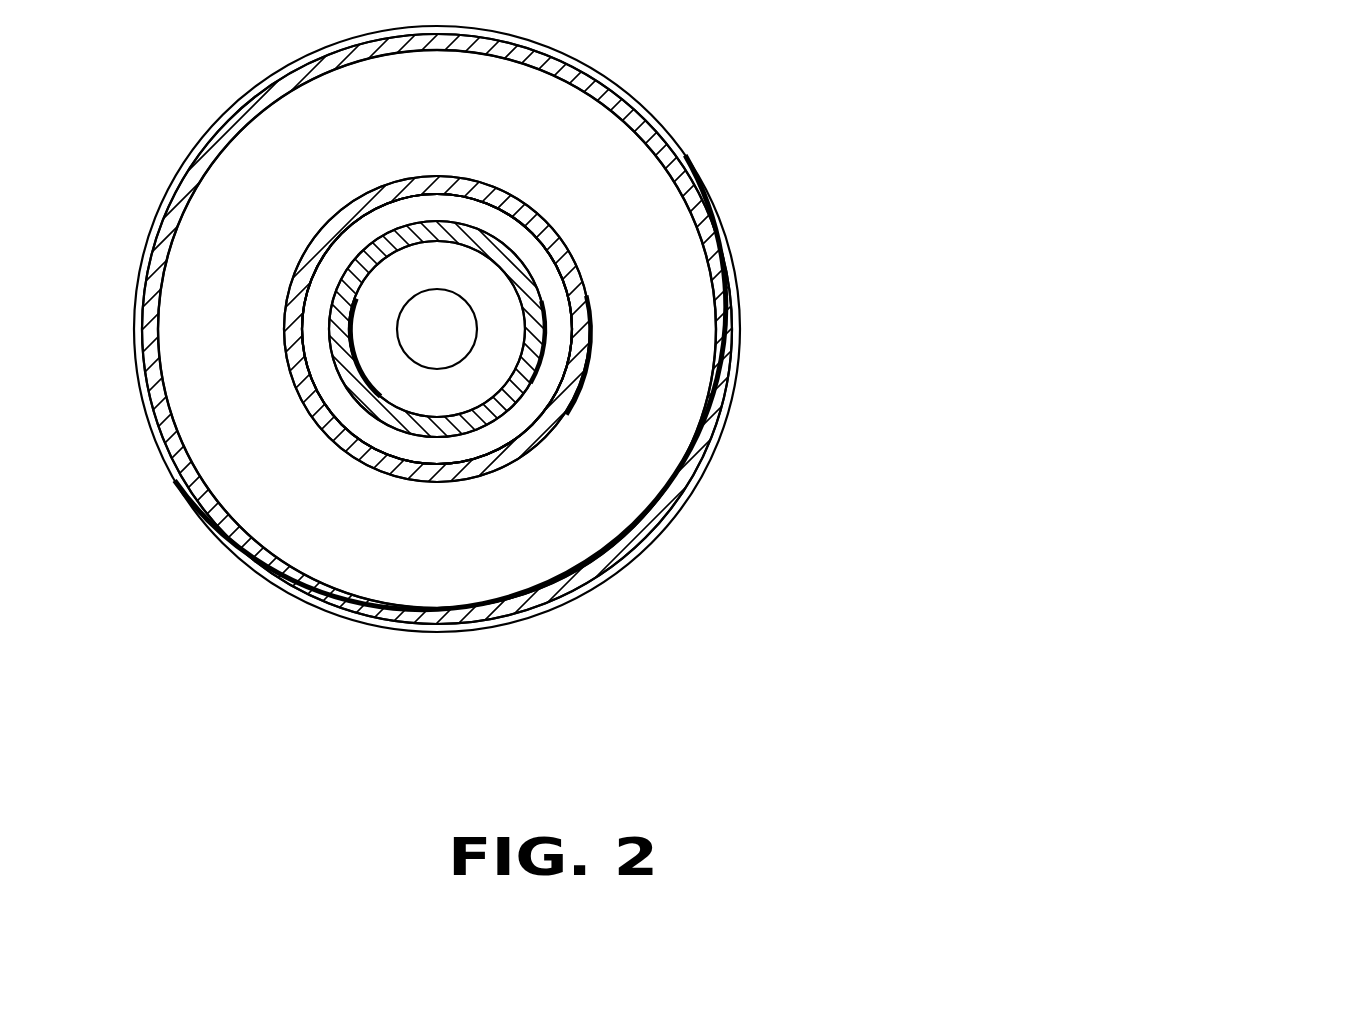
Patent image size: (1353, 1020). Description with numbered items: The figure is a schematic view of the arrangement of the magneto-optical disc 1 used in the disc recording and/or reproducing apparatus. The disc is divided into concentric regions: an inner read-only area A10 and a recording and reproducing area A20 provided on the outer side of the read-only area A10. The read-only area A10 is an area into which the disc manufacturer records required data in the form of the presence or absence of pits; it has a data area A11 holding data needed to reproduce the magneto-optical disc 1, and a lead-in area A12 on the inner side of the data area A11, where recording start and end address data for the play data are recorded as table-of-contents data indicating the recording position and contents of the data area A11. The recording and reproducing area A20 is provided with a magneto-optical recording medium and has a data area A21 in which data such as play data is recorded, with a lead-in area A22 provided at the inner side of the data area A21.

The magneto-optical disc 1 is at (685, 539).
The read-only area A10 is at (785, 294).
The data area A11 is at (540, 262).
The lead-in area A12 is at (507, 253).
The recording and reproducing area A20 is at (733, 329).
The data area A21 is at (647, 378).
The lead-in area A22 is at (577, 288).